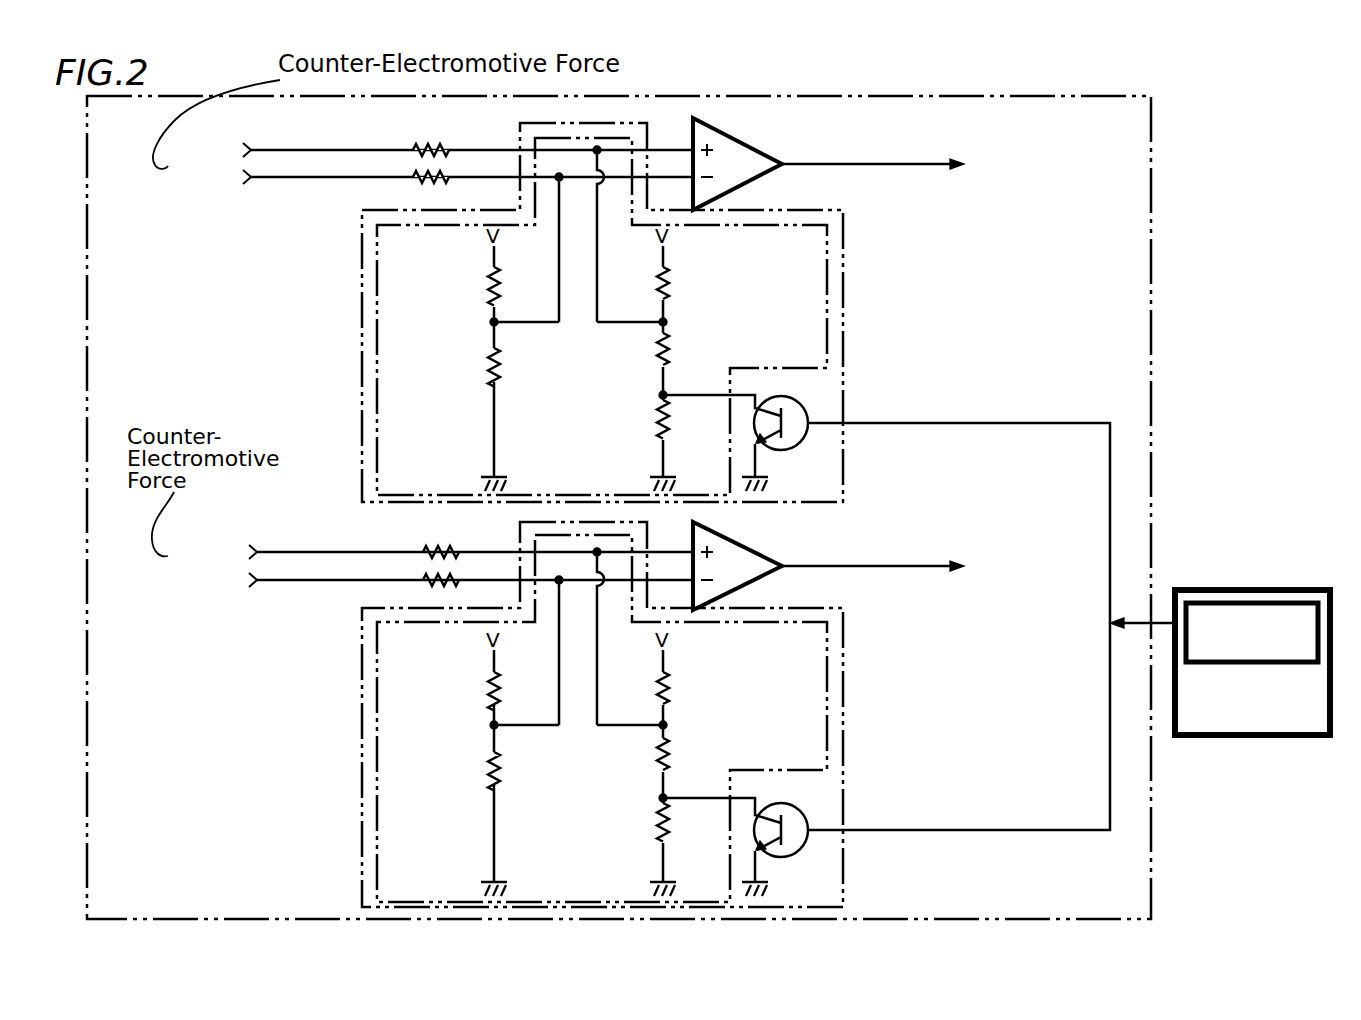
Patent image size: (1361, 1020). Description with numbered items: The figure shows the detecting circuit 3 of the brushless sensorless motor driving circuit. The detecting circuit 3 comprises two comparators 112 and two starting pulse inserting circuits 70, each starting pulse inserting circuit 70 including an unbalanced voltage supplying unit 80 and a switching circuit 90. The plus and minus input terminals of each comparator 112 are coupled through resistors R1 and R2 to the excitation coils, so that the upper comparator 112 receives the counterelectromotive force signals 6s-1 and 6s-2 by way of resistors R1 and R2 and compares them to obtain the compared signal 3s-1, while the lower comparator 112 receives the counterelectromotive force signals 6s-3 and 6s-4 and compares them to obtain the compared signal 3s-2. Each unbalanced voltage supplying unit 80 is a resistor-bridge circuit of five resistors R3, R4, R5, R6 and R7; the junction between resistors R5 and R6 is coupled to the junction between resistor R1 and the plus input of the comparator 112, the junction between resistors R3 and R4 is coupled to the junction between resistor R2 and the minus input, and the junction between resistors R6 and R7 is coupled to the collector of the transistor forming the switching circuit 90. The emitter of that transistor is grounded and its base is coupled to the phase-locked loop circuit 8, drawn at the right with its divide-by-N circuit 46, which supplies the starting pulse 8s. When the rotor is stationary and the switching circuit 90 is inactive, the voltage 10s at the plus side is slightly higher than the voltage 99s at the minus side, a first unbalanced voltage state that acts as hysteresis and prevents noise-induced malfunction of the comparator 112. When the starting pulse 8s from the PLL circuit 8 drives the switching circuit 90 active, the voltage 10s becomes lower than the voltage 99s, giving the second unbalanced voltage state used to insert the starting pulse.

The detecting circuit 3 is at (1152, 369).
The counterelectromotive force 6s-1 is at (430, 151).
The counterelectromotive force 6s-2 is at (430, 179).
The counterelectromotive force 6s-3 is at (430, 553).
The counterelectromotive force 6s-4 is at (430, 581).
The compared signal 3s-1 is at (901, 166).
The compared signal 3s-2 is at (901, 568).
The resistor R1 is at (420, 145).
The resistor R2 is at (413, 181).
The resistor R3 is at (494, 287).
The resistor R4 is at (494, 367).
The resistor R5 is at (663, 281).
The resistor R6 is at (663, 350).
The resistor R7 is at (660, 430).
The comparator 112 is at (750, 148).
The unbalanced voltage supplying unit 80 is at (377, 686).
The switching circuit 90 is at (807, 409).
The starting pulse inserting circuit 70 is at (844, 467).
The voltage 99s is at (540, 324).
The voltage 10s is at (625, 324).
The starting pulse 8s is at (1161, 622).
The divide-by-N circuit 46 is at (1222, 601).
The phase-locked loop circuit 8 is at (1228, 739).